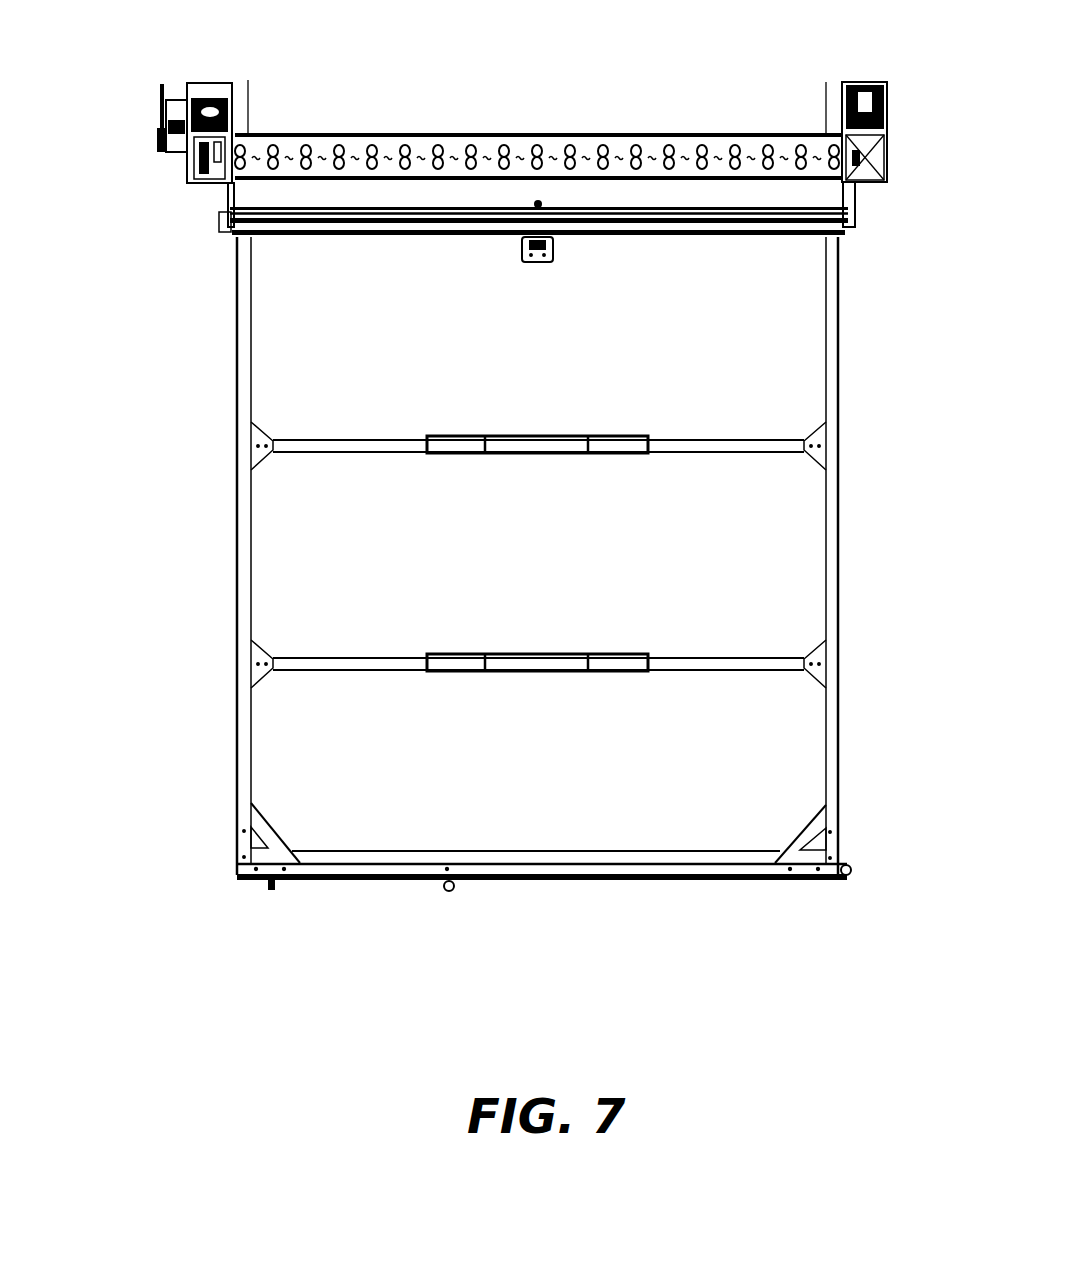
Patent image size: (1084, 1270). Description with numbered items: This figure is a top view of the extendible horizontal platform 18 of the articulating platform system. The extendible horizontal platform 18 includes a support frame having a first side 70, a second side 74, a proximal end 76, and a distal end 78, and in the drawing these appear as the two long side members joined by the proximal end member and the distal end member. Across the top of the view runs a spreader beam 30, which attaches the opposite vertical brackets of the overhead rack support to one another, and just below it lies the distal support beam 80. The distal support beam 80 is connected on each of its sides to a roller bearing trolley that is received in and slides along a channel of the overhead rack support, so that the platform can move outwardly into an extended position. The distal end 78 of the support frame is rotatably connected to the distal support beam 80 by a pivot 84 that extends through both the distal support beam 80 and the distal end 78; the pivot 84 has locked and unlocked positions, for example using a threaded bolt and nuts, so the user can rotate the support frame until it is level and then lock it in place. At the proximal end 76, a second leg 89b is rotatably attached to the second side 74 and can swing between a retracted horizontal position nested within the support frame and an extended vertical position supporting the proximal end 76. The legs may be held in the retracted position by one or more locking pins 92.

The extendible horizontal platform 18 is at (150, 410).
The spreader beam 30 is at (645, 148).
The first side 70 is at (246, 540).
The second side 74 is at (830, 525).
The proximal end 76 is at (755, 868).
The distal end 78 is at (838, 233).
The distal support beam 80 is at (852, 213).
The pivot 84 is at (538, 200).
The second leg 89b is at (325, 853).
The locking pin 92 is at (270, 889).